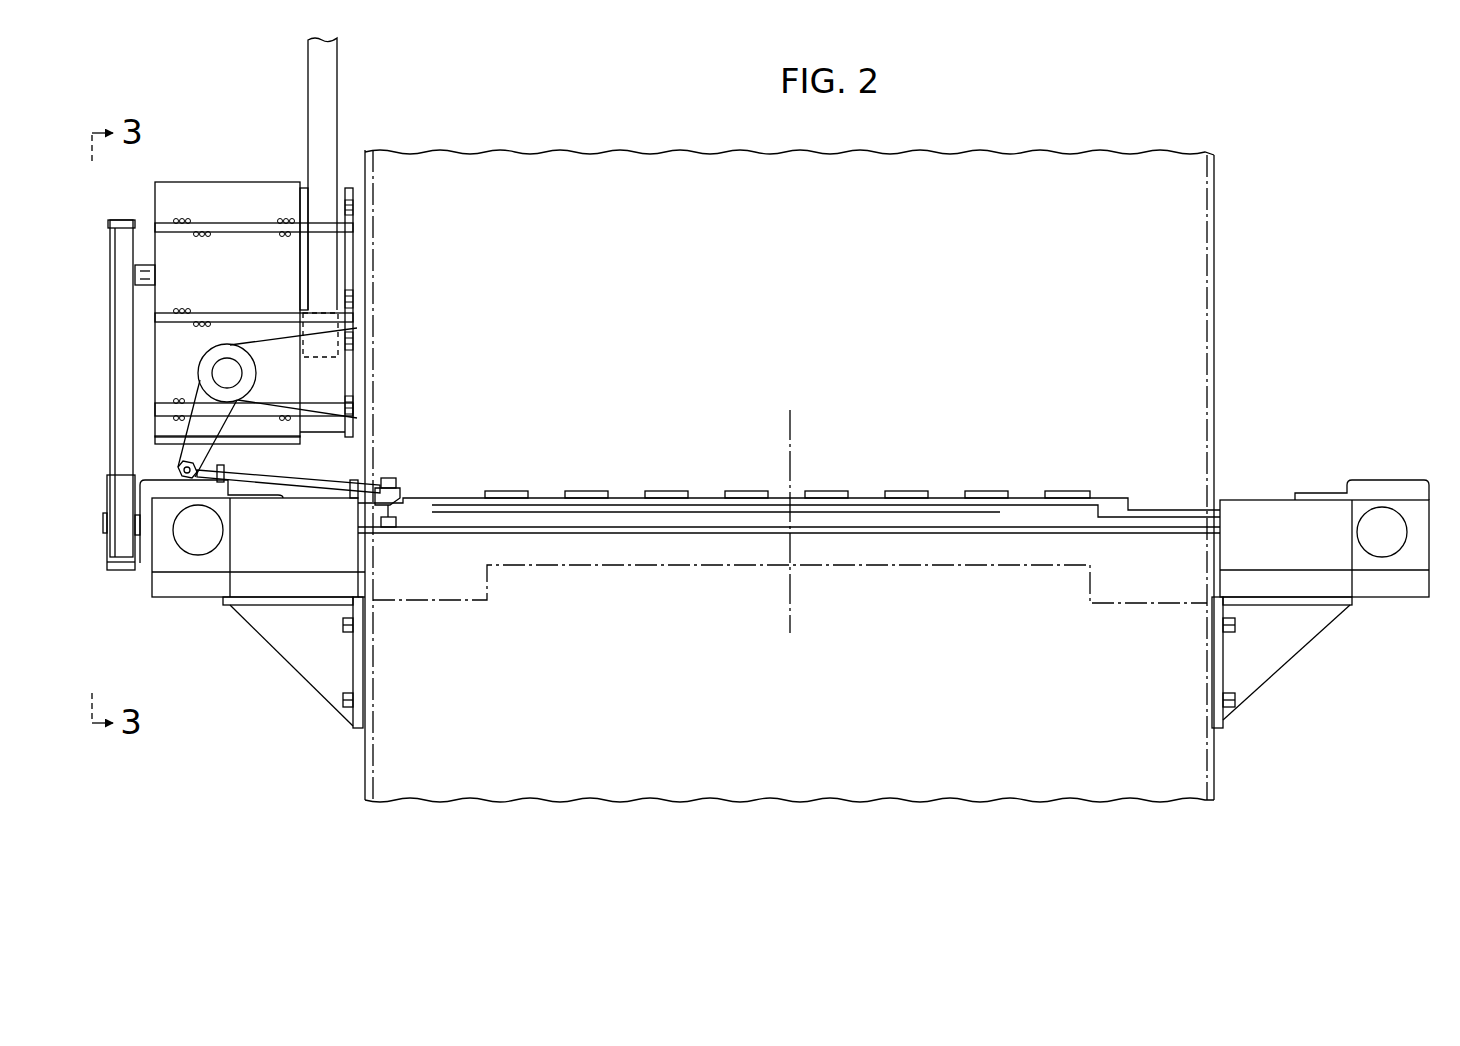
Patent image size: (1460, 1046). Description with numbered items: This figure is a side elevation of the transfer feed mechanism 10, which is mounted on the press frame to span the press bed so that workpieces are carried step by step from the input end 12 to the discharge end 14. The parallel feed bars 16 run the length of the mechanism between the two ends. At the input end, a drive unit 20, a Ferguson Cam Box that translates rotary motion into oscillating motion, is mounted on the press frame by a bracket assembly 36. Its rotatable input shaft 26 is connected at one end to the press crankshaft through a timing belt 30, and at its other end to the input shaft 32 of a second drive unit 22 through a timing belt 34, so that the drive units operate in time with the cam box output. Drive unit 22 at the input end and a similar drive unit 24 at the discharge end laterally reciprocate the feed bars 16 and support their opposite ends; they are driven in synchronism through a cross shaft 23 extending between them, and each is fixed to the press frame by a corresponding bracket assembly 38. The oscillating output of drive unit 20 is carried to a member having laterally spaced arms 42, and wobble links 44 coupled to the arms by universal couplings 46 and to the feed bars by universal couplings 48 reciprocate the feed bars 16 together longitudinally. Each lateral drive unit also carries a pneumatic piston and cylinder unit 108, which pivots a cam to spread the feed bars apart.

The transfer feed mechanism 10 is at (432, 105).
The input end 12 is at (388, 428).
The discharge end 14 is at (1265, 447).
The feed bars 16 is at (548, 496).
The drive unit 20 is at (205, 182).
The drive unit 22 is at (198, 599).
The cross shaft 23 is at (744, 528).
The drive unit 24 is at (1385, 600).
The input shaft 26 is at (300, 278).
The timing belt 30 is at (322, 113).
The input shaft 32 is at (105, 522).
The timing belt 34 is at (122, 401).
The bracket assembly 36 is at (254, 200).
The bracket assemblies 38 is at (292, 670).
The arms 42 is at (205, 400).
The wobble links 44 is at (305, 483).
The universal couplings 46 is at (177, 466).
The universal couplings 48 is at (400, 487).
The pneumatic piston and cylinder unit 108 is at (185, 550).